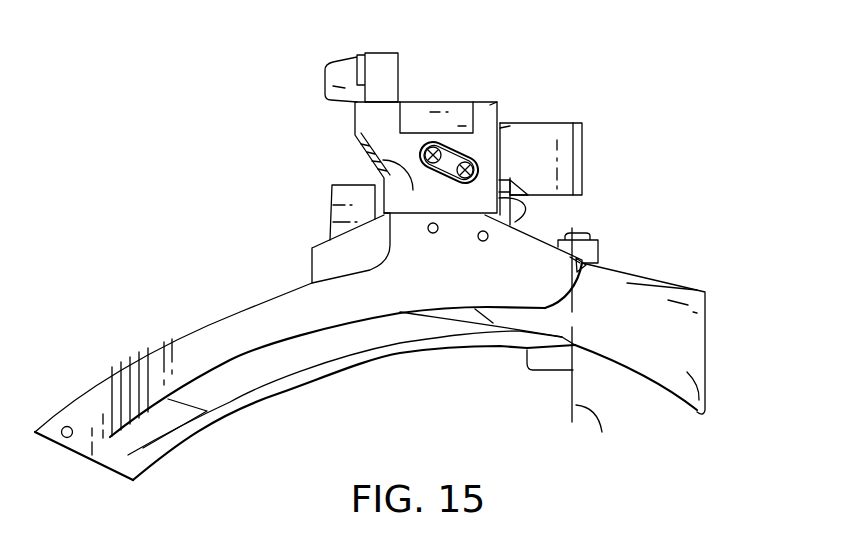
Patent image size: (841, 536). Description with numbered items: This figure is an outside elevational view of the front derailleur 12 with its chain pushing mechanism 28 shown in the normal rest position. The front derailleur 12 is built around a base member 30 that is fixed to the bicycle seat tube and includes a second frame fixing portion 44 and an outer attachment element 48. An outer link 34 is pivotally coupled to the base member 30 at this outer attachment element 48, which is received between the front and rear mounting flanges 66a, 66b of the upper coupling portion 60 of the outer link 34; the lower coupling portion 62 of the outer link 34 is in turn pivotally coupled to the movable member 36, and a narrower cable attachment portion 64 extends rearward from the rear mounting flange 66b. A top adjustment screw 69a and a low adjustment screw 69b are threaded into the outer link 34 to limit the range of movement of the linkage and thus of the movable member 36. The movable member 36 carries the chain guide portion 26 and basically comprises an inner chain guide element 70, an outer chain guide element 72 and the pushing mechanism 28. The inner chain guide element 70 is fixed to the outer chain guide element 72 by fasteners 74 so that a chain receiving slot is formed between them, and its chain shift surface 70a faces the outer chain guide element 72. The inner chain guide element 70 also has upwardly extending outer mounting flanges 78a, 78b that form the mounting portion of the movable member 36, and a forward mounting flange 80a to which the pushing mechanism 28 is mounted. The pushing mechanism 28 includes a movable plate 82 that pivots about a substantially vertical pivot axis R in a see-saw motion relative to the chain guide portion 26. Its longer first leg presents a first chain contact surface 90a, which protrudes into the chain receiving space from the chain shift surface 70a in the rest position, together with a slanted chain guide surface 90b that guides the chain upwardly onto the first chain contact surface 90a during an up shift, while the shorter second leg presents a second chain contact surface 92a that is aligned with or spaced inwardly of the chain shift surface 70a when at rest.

The front derailleur 12 is at (561, 55).
The chain guide portion 26 is at (106, 364).
The chain pushing mechanism 28 is at (621, 238).
The base member 30 is at (590, 135).
The outer link 34 is at (498, 96).
The movable member 36 is at (541, 236).
The second frame fixing portion 44 is at (560, 162).
The outer attachment element 48 is at (453, 112).
The upper coupling portion 60 is at (499, 115).
The lower coupling portion 62 is at (364, 157).
The cable attachment portion 64 is at (380, 63).
The front mounting flange 66a is at (487, 107).
The rear mounting flange 66b is at (372, 118).
The top adjustment screw 69a is at (453, 172).
The low adjustment screw 69b is at (424, 140).
The inner chain guide element 70 is at (249, 406).
The chain shift surface 70a is at (288, 357).
The outer chain guide element 72 is at (173, 358).
The fasteners 74 is at (483, 242).
The outer mounting flange 78a is at (528, 195).
The outer mounting flange 78b is at (377, 202).
The forward mounting flange 80a is at (598, 256).
The movable plate 82 is at (710, 330).
The first chain contact surface 90a is at (614, 335).
The slanted chain guide surface 90b is at (656, 385).
The second chain contact surface 92a is at (490, 320).
The pivot axis R is at (591, 345).